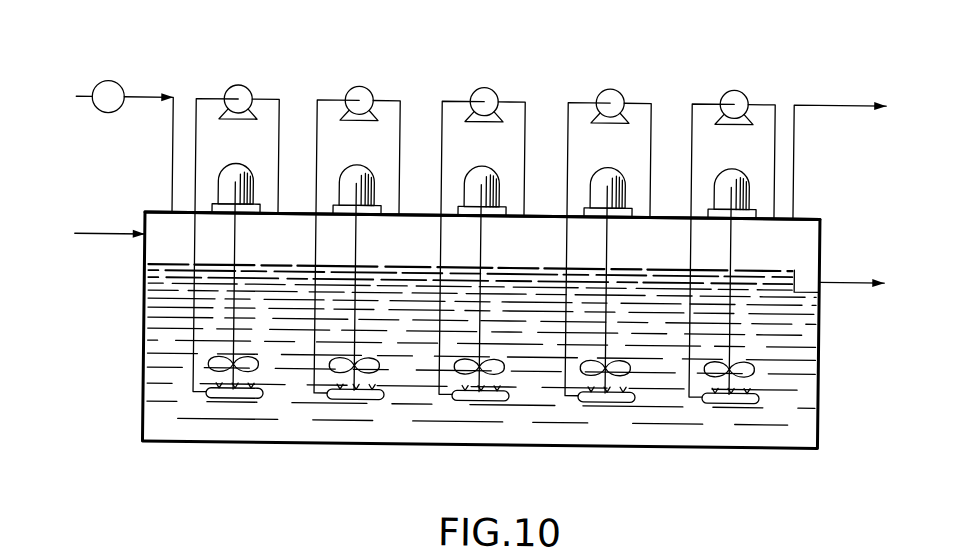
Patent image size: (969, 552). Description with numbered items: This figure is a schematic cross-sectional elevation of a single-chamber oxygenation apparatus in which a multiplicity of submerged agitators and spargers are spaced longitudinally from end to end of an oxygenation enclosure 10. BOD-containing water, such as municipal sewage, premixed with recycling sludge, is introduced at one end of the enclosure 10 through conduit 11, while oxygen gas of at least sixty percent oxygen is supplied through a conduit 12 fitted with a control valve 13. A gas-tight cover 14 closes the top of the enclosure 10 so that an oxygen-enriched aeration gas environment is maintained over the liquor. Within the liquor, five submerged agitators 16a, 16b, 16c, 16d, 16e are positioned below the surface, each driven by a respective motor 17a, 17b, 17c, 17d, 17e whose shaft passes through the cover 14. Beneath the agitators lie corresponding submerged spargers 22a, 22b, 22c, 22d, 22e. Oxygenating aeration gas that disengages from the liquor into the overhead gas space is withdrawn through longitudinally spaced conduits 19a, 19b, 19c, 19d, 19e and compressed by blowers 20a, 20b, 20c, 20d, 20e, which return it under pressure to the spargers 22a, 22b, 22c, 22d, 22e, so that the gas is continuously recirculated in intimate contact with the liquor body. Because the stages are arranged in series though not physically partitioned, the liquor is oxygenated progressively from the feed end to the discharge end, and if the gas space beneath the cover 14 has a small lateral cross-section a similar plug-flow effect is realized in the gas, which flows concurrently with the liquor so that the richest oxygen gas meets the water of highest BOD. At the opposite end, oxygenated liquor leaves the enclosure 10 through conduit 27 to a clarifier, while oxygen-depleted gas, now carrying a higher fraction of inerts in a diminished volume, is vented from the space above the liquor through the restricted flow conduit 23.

The oxygenation enclosure 10 is at (145, 367).
The conduit 11 is at (87, 231).
The oxygen conduit 12 is at (83, 95).
The control valve 13 is at (115, 83).
The gas-tight cover 14 is at (286, 211).
The submerged agitator 16a is at (254, 286).
The submerged agitator 16b is at (375, 287).
The submerged agitator 16c is at (499, 288).
The submerged agitator 16d is at (626, 290).
The submerged agitator 16e is at (750, 291).
The motor 17a is at (233, 171).
The motor 17b is at (353, 175).
The motor 17c is at (478, 175).
The motor 17d is at (604, 175).
The motor 17e is at (728, 177).
The gas withdrawal conduit 19a is at (254, 224).
The gas withdrawal conduit 19b is at (374, 228).
The gas withdrawal conduit 19c is at (499, 231).
The gas withdrawal conduit 19d is at (627, 233).
The gas withdrawal conduit 19e is at (748, 232).
The blower 20a is at (237, 77).
The blower 20b is at (363, 81).
The blower 20c is at (486, 84).
The blower 20d is at (618, 87).
The blower 20e is at (737, 89).
The sparger 22a is at (234, 432).
The sparger 22b is at (355, 431).
The sparger 22c is at (480, 433).
The sparger 22d is at (606, 434).
The sparger 22e is at (730, 435).
The restricted flow conduit 23 is at (834, 98).
The liquor discharge conduit 27 is at (840, 274).